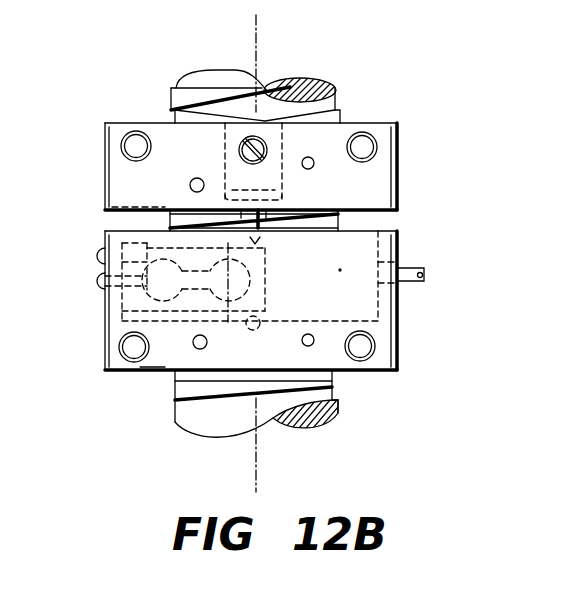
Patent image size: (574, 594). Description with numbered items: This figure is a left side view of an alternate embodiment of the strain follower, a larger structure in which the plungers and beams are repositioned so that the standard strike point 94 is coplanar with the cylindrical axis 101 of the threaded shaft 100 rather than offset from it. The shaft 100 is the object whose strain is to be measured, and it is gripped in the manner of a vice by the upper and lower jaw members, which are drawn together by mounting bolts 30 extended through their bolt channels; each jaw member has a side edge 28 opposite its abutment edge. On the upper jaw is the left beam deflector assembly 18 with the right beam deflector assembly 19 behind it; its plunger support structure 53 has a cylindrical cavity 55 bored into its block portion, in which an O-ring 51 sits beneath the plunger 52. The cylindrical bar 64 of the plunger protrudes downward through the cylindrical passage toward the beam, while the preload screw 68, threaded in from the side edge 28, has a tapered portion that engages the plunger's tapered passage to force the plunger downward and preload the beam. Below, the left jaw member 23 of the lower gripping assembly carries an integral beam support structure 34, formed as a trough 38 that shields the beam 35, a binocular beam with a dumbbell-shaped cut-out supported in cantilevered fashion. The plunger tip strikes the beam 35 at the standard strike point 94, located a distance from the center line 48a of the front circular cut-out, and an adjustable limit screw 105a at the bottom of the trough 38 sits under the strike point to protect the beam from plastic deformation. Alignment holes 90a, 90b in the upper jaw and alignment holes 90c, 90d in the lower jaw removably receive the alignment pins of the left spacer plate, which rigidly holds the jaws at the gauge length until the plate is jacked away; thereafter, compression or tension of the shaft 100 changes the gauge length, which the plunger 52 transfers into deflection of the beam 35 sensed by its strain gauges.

The cylindrical axis 101 is at (257, 32).
The cylindrical cavity 55 is at (238, 72).
The side edge 28 is at (152, 122).
The alignment hole 90b is at (310, 157).
The mounting bolt 30 is at (136, 150).
The preload screw 68 is at (263, 148).
The plunger support structure 53 is at (400, 162).
The right beam deflector assembly 19 is at (105, 170).
The plunger 52 is at (283, 189).
The alignment hole 90a is at (190, 187).
The O-ring 51 is at (283, 199).
The cylindrical bar 64 is at (168, 222).
The trough 38 is at (377, 230).
The standard strike point 94 is at (262, 240).
The beam 35 is at (122, 270).
The alignment hole 90d is at (310, 333).
The beam support structure 34 is at (399, 297).
The left beam deflector assembly 18 is at (105, 318).
The center line 48a is at (200, 349).
The adjustable limit screw 105a is at (252, 331).
The left jaw member 23 is at (398, 368).
The alignment hole 90c is at (158, 368).
The threaded shaft 100 is at (294, 422).